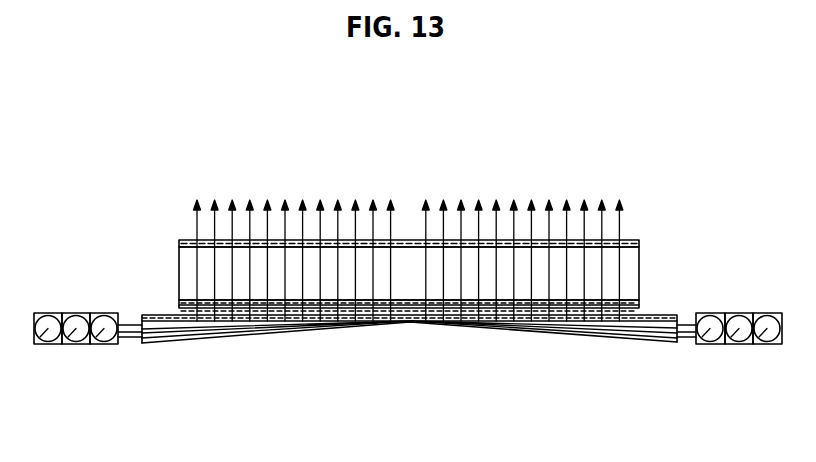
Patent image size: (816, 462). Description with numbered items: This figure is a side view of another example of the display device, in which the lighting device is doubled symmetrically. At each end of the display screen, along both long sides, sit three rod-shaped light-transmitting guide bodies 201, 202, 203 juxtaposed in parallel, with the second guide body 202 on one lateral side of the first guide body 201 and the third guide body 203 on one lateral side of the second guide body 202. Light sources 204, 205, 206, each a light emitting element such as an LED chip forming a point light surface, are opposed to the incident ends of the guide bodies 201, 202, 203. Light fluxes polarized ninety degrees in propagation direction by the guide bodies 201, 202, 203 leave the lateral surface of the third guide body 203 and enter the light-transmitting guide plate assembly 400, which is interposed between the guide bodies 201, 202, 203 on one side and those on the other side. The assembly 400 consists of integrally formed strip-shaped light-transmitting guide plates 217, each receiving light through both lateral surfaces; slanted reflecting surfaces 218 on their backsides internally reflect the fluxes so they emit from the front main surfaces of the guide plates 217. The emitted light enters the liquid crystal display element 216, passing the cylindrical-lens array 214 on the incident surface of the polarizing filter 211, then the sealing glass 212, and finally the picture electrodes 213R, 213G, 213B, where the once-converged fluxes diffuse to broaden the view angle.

The first light-transmitting guide body 201 is at (35, 313).
The second light-transmitting guide body 202 is at (63, 313).
The third light-transmitting guide body 203 is at (94, 313).
The first light source 204 is at (40, 345).
The second light source 205 is at (72, 345).
The third light source 206 is at (98, 345).
The polarizing filter 211 is at (633, 254).
The sealing glass 212 is at (642, 243).
The picture electrode 213R is at (178, 239).
The picture electrode 213G is at (187, 230).
The picture electrode 213B is at (207, 230).
The cylindrical-lens array 214 is at (176, 306).
The liquid crystal display element 216 is at (409, 203).
The light-transmitting guide plate 217 is at (245, 341).
The reflecting surface 218 is at (328, 339).
The light-transmitting guide plate assembly 400 is at (467, 341).